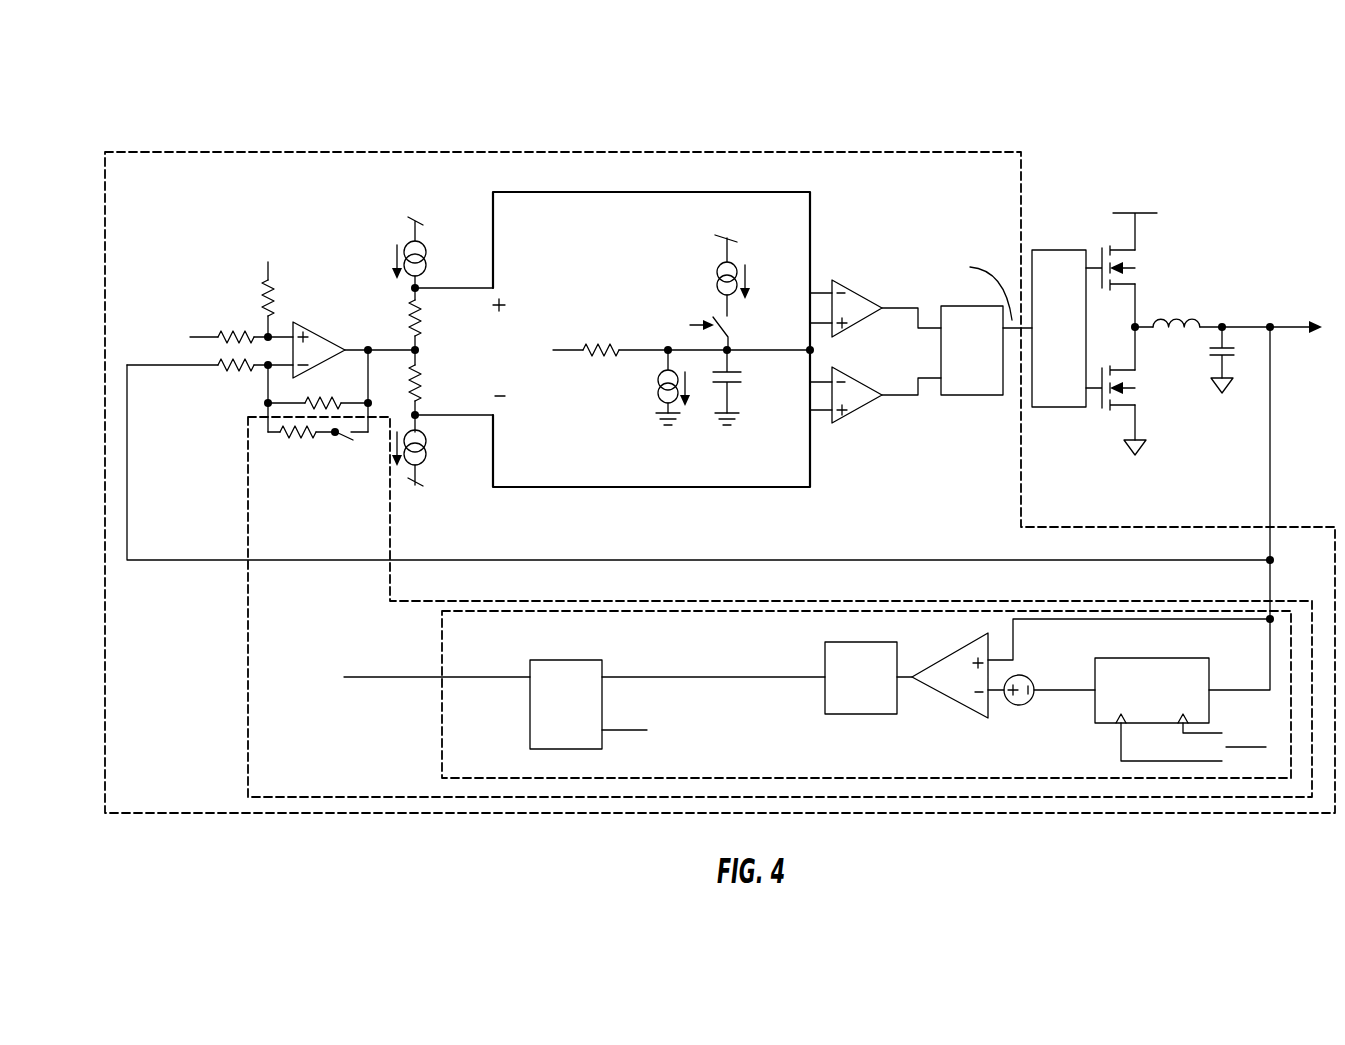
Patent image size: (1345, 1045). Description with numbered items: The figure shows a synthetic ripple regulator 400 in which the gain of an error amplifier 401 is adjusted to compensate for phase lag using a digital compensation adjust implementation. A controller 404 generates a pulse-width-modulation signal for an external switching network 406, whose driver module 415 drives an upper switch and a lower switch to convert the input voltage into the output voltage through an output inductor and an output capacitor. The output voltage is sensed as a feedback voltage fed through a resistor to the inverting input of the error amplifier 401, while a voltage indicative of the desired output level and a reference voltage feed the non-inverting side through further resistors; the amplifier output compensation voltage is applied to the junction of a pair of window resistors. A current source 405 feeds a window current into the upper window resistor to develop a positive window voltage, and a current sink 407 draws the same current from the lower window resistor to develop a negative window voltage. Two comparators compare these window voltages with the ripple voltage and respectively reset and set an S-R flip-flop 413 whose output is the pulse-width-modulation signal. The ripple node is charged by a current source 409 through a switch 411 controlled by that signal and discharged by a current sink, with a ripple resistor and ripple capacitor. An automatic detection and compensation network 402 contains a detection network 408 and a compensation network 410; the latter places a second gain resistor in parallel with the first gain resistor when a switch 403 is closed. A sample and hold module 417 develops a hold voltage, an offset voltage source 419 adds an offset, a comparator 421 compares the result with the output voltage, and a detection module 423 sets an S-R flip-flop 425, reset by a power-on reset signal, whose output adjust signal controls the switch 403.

The synthetic ripple regulator 400 is at (744, 130).
The error amplifier 401 is at (319, 343).
The automatic detection and compensation network 402 is at (304, 767).
The switch 403 is at (344, 677).
The controller 404 is at (180, 799).
The current source 405 is at (425, 241).
The switching network 406 is at (1193, 260).
The current sink 407 is at (421, 466).
The detection network 408 is at (490, 767).
The current source 409 is at (722, 264).
The compensation network 410 is at (306, 478).
The switch 411 is at (733, 320).
The S-R flip-flop 413 is at (660, 397).
The driver module 415 is at (1077, 364).
The sample and hold module 417 is at (1169, 716).
The offset voltage source 419 is at (1026, 695).
The comparator 421 is at (970, 690).
The detection module 423 is at (877, 706).
The S-R flip-flop 425 is at (580, 720).